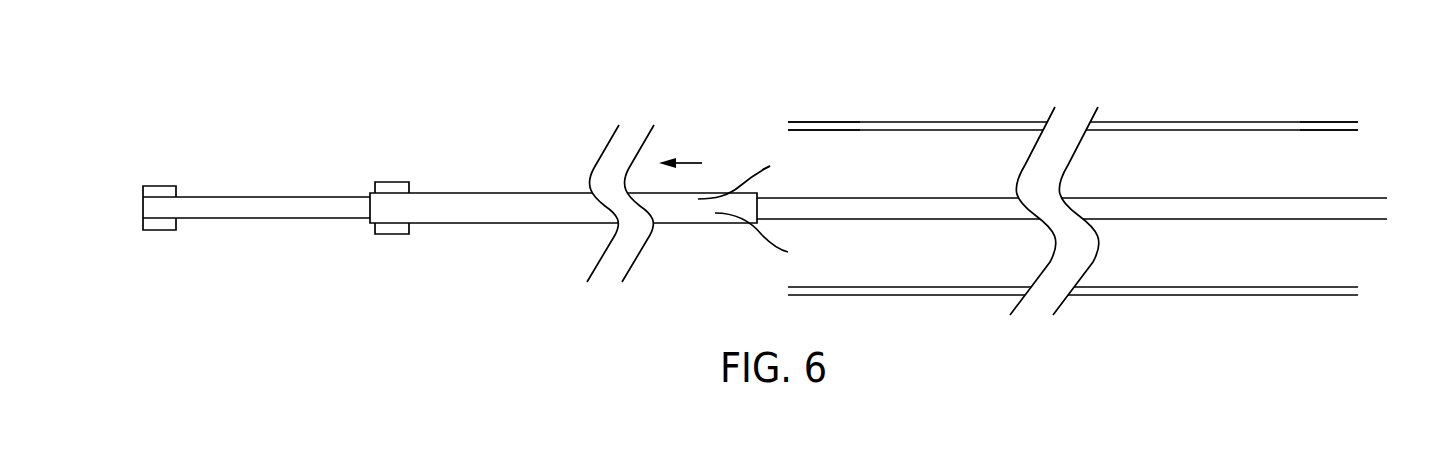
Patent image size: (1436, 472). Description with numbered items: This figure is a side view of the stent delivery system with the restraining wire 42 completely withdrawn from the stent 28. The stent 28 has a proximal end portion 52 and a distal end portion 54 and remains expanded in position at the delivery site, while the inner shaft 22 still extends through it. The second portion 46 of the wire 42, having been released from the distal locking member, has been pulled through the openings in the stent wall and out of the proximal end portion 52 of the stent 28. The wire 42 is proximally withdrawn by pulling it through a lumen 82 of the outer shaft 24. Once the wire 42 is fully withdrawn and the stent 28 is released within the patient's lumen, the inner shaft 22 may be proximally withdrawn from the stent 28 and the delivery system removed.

The lumen 82 is at (354, 219).
The outer shaft 24 is at (682, 224).
The inner shaft 22 is at (1360, 220).
The stent 28 is at (1178, 121).
The proximal end portion 52 is at (807, 121).
The distal end portion 54 is at (1338, 121).
The wire 42 is at (745, 182).
The second portion 46 is at (770, 165).